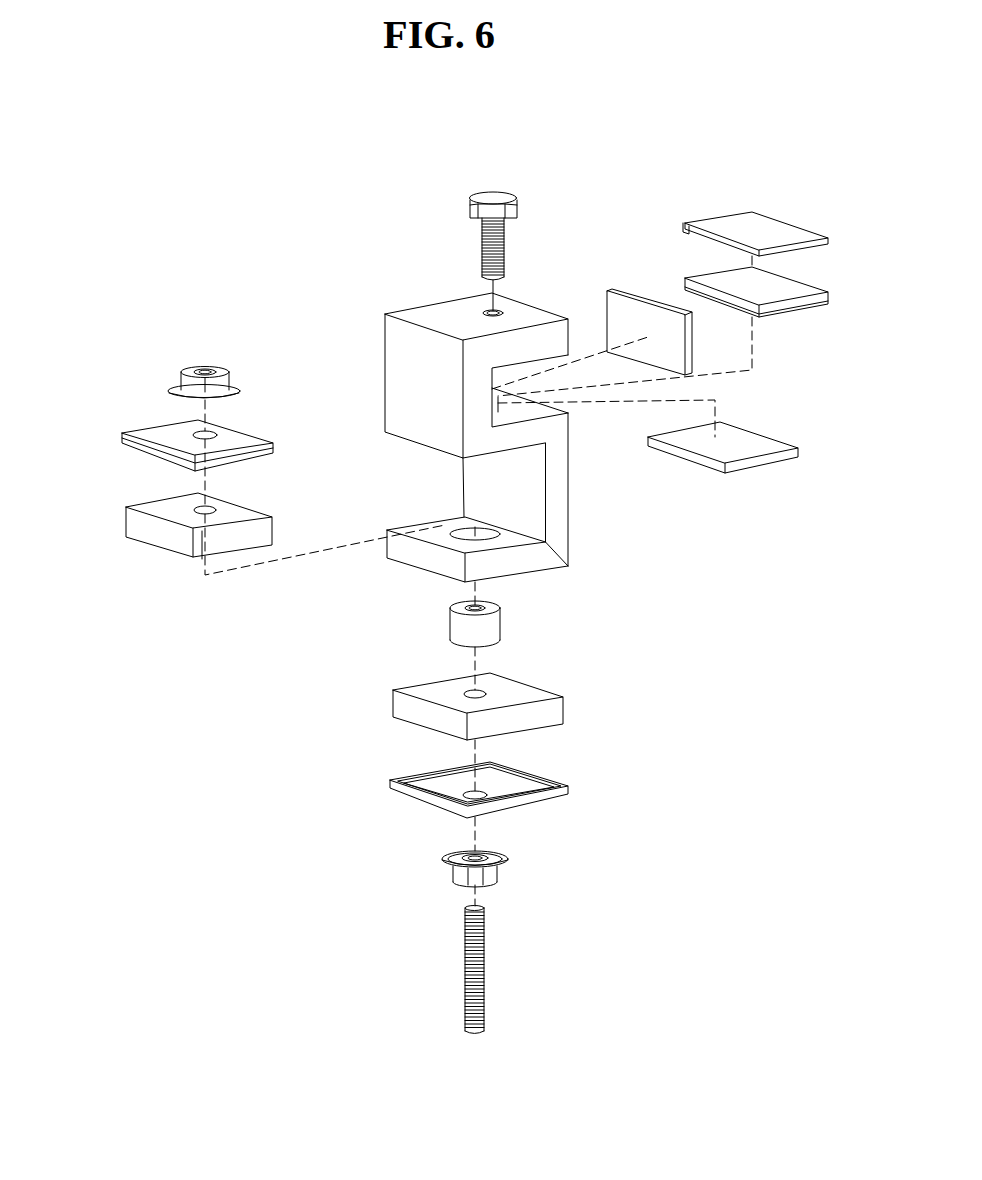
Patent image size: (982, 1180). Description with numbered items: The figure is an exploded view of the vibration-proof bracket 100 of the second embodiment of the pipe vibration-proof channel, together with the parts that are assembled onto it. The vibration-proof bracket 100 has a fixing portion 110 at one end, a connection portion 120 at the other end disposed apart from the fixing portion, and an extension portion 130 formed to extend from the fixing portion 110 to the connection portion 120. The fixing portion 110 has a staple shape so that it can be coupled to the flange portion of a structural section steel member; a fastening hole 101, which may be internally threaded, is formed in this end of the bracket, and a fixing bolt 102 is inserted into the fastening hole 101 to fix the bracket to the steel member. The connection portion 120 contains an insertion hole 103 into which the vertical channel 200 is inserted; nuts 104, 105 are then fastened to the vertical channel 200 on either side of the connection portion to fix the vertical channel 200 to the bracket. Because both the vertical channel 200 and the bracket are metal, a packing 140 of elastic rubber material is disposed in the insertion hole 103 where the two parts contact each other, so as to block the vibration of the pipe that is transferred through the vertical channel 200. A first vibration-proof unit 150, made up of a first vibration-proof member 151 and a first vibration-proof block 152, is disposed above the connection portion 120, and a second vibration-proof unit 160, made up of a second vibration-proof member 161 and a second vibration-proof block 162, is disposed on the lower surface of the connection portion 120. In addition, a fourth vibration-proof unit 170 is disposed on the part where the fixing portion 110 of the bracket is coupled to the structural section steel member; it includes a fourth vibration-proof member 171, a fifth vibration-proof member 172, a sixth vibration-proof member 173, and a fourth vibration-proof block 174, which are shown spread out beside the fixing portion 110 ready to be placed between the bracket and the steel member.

The vibration-proof bracket 100 is at (373, 246).
The fastening hole 101 is at (500, 312).
The fixing bolt 102 is at (508, 198).
The insertion hole 103 is at (486, 534).
The nut 104 is at (181, 370).
The nut 105 is at (500, 870).
The fixing portion 110 is at (391, 333).
The connection portion 120 is at (403, 530).
The extension portion 130 is at (562, 497).
The packing 140 is at (497, 620).
The first vibration-proof unit 150 is at (98, 385).
The first vibration-proof member 151 is at (178, 507).
The first vibration-proof block 152 is at (162, 433).
The second vibration-proof unit 160 is at (612, 765).
The second vibration-proof member 161 is at (543, 720).
The second vibration-proof block 162 is at (540, 798).
The fourth vibration-proof unit 170 is at (714, 209).
The fourth vibration-proof member 171 is at (723, 473).
The fifth vibration-proof member 172 is at (607, 293).
The sixth vibration-proof member 173 is at (693, 285).
The fourth vibration-proof block 174 is at (685, 227).
The vertical channel 200 is at (463, 957).